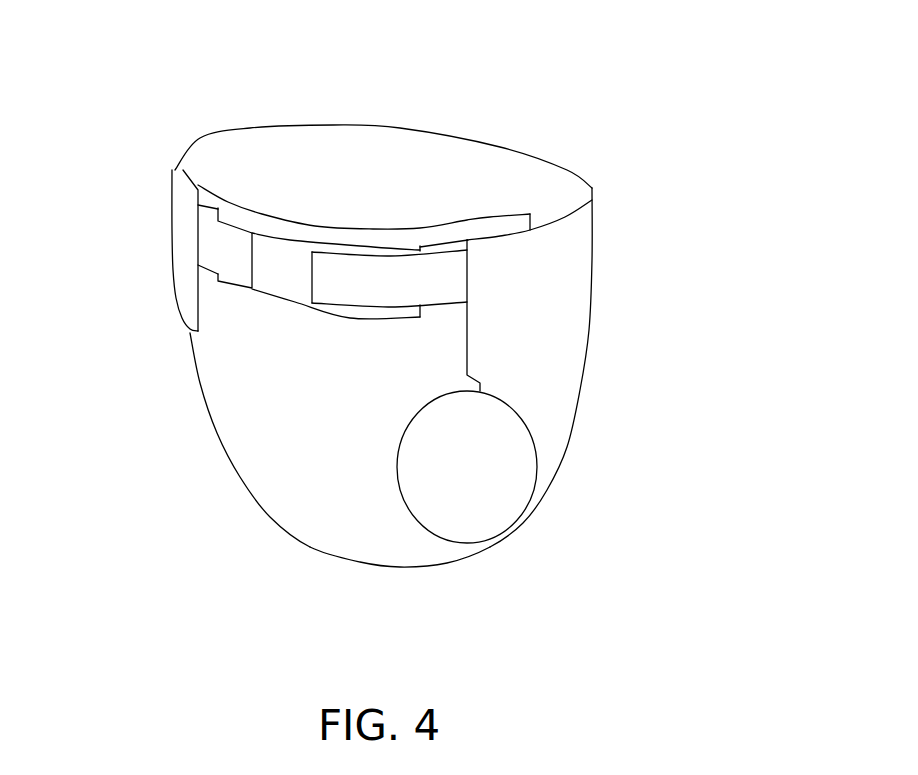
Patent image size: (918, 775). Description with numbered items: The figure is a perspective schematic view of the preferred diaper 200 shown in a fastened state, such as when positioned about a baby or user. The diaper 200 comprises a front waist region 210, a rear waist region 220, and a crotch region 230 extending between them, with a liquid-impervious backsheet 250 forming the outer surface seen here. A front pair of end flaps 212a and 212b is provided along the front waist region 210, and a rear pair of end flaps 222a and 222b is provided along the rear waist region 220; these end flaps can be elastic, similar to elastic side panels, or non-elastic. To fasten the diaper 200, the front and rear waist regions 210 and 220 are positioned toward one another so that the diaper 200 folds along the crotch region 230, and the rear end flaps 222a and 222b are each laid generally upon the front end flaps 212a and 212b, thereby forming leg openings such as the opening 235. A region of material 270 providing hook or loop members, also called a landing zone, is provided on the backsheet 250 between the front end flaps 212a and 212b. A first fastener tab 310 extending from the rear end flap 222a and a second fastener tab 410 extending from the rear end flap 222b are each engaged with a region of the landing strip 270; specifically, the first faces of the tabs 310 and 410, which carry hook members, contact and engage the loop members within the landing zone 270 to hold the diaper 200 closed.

The diaper 200 is at (672, 92).
The front waist region 210 is at (290, 327).
The front end flap 212a is at (187, 172).
The front end flap 212b is at (500, 213).
The rear waist region 220 is at (458, 158).
The rear end flap 222a is at (180, 273).
The rear end flap 222b is at (487, 252).
The crotch region 230 is at (342, 535).
The leg opening 235 is at (467, 542).
The liquid-impervious backsheet 250 is at (273, 430).
The landing zone 270 is at (283, 250).
The first fastener tab 310 is at (220, 248).
The second fastener tab 410 is at (390, 273).